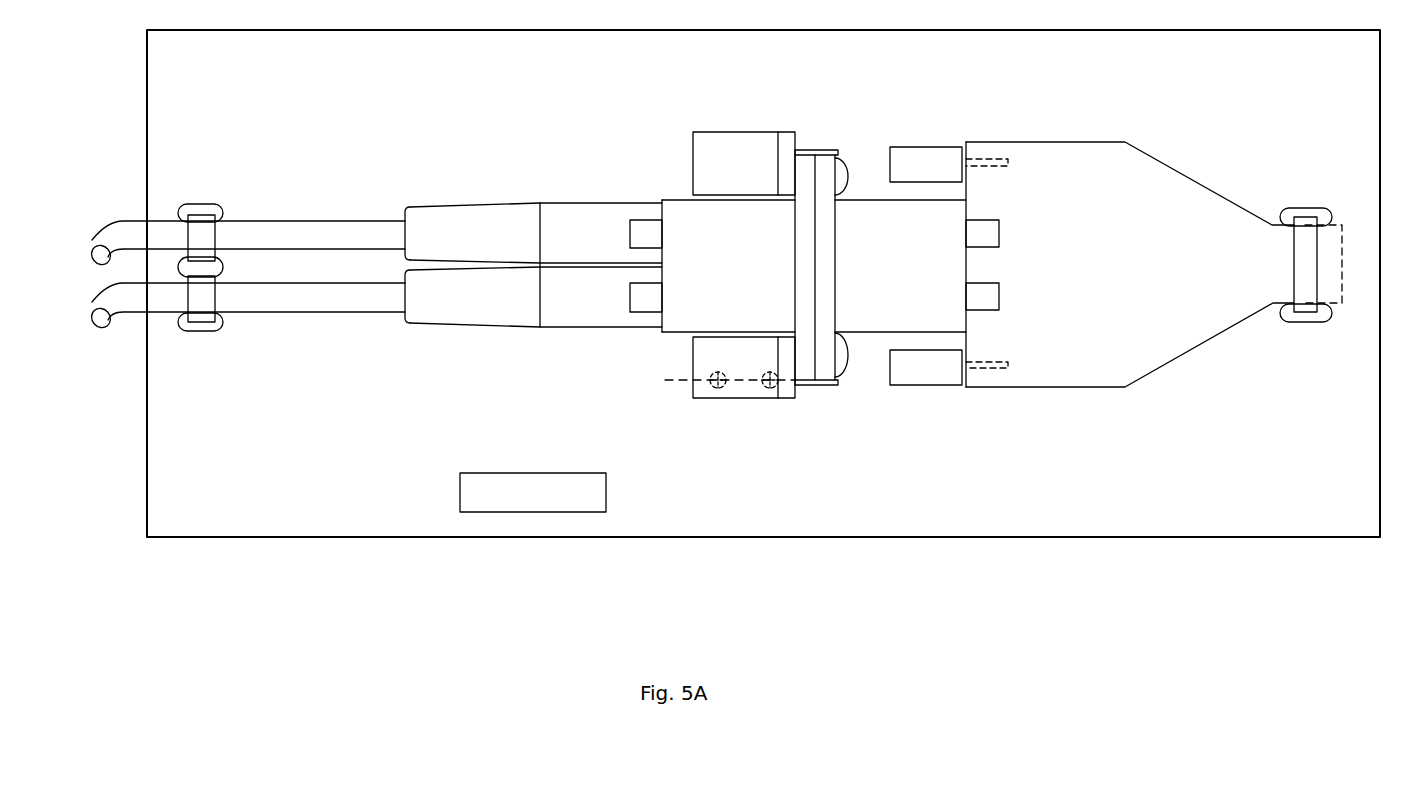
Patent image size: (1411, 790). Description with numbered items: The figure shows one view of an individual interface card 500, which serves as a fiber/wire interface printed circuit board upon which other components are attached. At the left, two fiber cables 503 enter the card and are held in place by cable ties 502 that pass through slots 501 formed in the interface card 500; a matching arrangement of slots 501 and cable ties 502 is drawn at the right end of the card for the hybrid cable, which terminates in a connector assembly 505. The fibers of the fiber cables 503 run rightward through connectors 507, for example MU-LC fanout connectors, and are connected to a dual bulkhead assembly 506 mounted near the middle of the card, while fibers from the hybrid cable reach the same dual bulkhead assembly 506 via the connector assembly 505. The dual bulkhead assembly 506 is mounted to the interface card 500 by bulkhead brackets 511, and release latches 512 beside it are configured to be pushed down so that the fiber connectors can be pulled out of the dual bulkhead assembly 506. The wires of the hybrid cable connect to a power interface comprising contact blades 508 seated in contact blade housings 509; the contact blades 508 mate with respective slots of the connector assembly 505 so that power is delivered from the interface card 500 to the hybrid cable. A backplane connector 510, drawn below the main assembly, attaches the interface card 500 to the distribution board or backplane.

The interface card 500 is at (327, 636).
The slots 501 is at (214, 212).
The cable ties 502 is at (196, 209).
The fiber cables 503 is at (278, 312).
The connector assembly 505 is at (1133, 160).
The dual bulkhead assembly 506 is at (822, 385).
The connectors 507 is at (549, 215).
The contact blades 508 is at (997, 162).
The contact blade housings 509 is at (915, 158).
The backplane connector 510 is at (563, 477).
The bulkhead brackets 511 is at (738, 143).
The release latches 512 is at (632, 240).